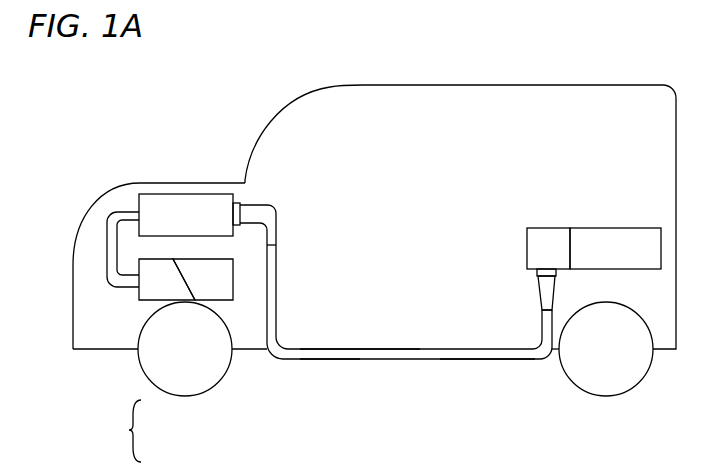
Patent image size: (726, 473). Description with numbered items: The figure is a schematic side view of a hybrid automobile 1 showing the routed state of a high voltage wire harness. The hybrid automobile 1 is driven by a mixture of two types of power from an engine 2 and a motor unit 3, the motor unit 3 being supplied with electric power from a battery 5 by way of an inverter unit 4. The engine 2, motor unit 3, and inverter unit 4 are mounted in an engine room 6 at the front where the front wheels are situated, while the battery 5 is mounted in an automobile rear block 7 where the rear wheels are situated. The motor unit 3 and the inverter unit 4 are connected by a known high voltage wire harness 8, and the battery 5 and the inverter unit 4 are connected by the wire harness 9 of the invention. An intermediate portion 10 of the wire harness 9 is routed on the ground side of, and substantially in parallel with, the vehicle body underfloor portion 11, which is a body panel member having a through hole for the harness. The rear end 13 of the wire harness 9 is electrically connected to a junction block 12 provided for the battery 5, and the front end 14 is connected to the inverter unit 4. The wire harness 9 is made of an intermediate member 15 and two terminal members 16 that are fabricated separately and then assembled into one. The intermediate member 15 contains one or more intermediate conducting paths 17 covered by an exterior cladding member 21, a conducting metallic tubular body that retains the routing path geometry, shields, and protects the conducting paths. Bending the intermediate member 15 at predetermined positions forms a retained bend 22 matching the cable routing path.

The hybrid automobile 1 is at (232, 97).
The engine 2 is at (222, 290).
The motor unit 3 is at (150, 300).
The inverter unit 4 is at (162, 212).
The battery 5 is at (598, 240).
The engine room 6 is at (85, 318).
The automobile rear block 7 is at (665, 327).
The high voltage wire harness 8 is at (110, 228).
The wire harness 9 is at (139, 431).
The intermediate portion 10 is at (337, 360).
The vehicle body underfloor portion 11 is at (376, 347).
The junction block 12 is at (543, 237).
The rear end 13 is at (538, 277).
The front end 14 is at (236, 202).
The intermediate member 15 is at (430, 359).
The terminal members 16 is at (278, 217).
The intermediate conducting paths 17 is at (520, 361).
The exterior cladding member 21 is at (461, 360).
The bend 22 is at (270, 361).